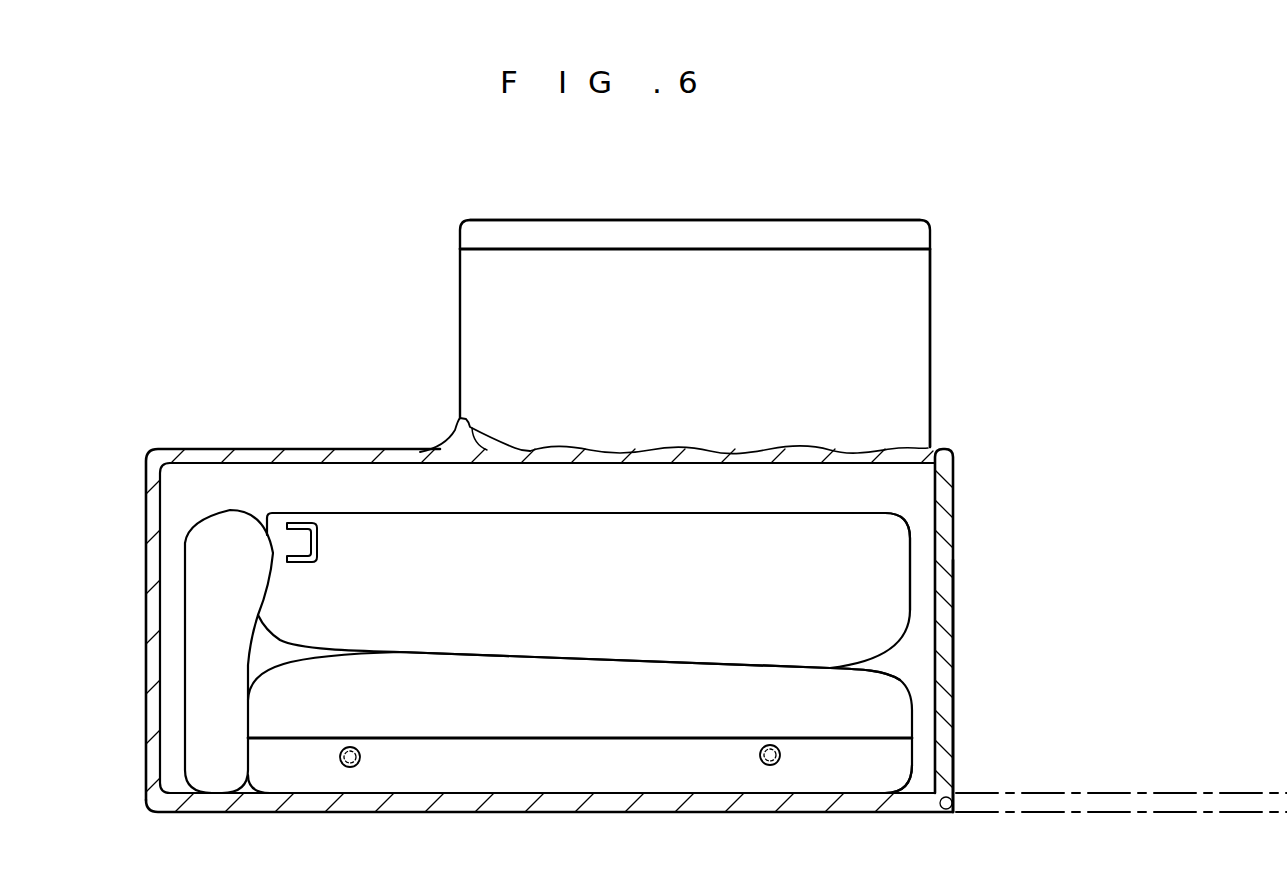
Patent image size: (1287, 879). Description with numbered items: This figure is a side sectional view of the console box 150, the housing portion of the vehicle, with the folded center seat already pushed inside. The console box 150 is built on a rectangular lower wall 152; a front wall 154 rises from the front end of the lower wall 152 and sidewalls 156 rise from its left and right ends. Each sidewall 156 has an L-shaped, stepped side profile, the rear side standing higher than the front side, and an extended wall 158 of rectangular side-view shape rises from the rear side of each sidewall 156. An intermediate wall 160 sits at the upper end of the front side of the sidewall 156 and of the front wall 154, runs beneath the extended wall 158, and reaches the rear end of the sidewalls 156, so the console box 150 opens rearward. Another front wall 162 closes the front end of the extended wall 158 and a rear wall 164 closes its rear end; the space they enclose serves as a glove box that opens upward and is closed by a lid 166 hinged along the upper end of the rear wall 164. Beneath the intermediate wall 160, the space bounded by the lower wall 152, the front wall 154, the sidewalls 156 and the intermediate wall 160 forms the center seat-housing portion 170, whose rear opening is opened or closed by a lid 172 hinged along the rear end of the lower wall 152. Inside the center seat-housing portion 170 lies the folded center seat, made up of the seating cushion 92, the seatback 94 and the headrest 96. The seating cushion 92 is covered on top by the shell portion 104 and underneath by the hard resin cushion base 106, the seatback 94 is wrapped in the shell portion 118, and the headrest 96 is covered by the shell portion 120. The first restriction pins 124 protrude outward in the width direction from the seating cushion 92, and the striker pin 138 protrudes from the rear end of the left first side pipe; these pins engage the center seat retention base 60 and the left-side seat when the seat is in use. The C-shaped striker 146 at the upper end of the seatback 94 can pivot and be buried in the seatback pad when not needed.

The center seat retention base 60 is at (390, 495).
The seating cushion 92 is at (917, 712).
The seatback 94 is at (917, 537).
The headrest 96 is at (237, 497).
The shell portion 104 is at (887, 688).
The cushion base 106 is at (900, 763).
The shell portion 118 is at (862, 565).
The shell portion 120 is at (197, 553).
The first restriction pin 124 is at (361, 757).
The striker pin 138 is at (781, 755).
The striker 146 is at (306, 523).
The console box 150 is at (997, 238).
The lower wall 152 is at (523, 792).
The front wall 154 is at (147, 503).
The sidewall 156 is at (918, 490).
The extended wall 158 is at (913, 362).
The intermediate wall 160 is at (287, 452).
The front wall 162 is at (459, 346).
The rear wall 164 is at (930, 280).
The lid 166 is at (712, 221).
The center seat-housing portion 170 is at (663, 478).
The lid 172 is at (954, 565).